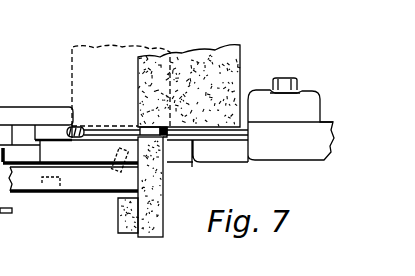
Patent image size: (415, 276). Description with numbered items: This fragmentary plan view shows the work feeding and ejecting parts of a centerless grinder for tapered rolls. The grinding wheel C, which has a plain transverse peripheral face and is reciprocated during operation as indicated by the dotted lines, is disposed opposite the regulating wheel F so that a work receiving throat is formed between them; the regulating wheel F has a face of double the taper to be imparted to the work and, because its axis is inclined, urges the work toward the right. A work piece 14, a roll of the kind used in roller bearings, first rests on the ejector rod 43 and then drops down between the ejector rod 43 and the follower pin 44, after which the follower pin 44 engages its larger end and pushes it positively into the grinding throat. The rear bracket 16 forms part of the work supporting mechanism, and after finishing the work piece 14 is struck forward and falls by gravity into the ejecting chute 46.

The work piece 14 is at (148, 129).
The rear bracket 16 is at (304, 103).
The ejector rod 43 is at (185, 137).
The follower pin 44 is at (130, 158).
The ejecting chute 46 is at (112, 142).
The grinding wheel C is at (215, 65).
The regulating wheel F is at (163, 222).